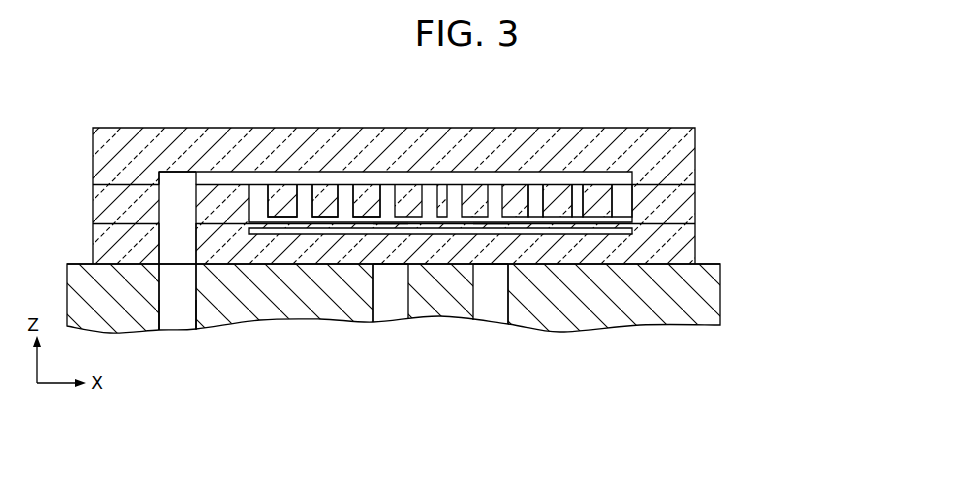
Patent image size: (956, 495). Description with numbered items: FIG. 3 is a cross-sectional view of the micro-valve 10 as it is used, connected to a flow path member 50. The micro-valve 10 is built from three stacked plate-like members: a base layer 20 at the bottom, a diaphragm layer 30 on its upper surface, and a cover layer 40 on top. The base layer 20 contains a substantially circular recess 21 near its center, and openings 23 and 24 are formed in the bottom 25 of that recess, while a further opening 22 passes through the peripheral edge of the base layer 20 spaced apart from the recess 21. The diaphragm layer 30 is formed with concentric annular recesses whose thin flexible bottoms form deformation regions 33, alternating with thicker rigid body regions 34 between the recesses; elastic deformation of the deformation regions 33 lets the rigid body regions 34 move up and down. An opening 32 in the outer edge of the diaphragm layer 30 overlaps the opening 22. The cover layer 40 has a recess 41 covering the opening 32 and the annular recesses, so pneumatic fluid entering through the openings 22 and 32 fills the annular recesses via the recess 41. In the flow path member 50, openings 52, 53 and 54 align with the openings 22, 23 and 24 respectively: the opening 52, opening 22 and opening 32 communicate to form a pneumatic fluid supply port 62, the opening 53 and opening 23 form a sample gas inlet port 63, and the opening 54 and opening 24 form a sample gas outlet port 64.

The micro-valve 10 is at (706, 96).
The base layer 20 is at (684, 249).
The recess 21 is at (262, 232).
The opening 22 is at (158, 238).
The opening 23 is at (377, 247).
The opening 24 is at (507, 247).
The bottom 25 is at (594, 231).
The diaphragm layer 30 is at (683, 210).
The opening 32 is at (158, 202).
The deformation region 33 is at (537, 216).
The rigid body region 34 is at (283, 192).
The cover layer 40 is at (681, 159).
The recess 41 is at (170, 177).
The flow path member 50 is at (708, 303).
The opening 52 is at (167, 297).
The opening 53 is at (378, 299).
The opening 54 is at (500, 299).
The supply port 62 is at (181, 333).
The inlet port 63 is at (392, 326).
The outlet port 64 is at (488, 329).